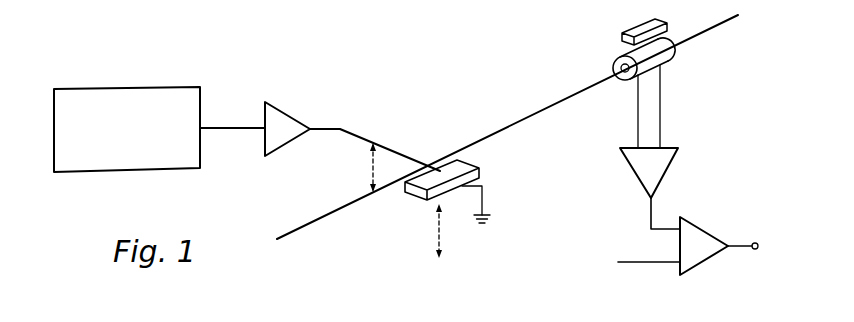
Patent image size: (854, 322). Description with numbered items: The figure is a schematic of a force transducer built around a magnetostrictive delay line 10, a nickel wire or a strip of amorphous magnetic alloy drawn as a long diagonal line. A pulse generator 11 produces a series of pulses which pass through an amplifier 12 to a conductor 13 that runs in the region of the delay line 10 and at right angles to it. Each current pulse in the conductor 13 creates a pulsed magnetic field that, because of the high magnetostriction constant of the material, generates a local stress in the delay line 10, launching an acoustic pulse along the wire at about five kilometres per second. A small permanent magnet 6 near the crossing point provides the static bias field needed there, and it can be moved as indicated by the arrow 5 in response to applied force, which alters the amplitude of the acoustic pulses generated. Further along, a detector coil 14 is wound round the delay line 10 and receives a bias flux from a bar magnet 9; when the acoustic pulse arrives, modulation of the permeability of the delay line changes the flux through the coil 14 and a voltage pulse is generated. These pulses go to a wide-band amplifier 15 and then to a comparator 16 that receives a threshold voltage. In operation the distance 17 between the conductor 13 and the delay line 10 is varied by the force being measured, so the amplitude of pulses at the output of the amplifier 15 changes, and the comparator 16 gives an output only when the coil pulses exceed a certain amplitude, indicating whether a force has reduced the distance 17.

The arrow 5 is at (437, 230).
The permanent magnet 6 is at (411, 198).
The bar magnet 9 is at (632, 34).
The magnetostrictive delay line 10 is at (517, 121).
The pulse generator 11 is at (123, 88).
The amplifier 12 is at (288, 114).
The conductor 13 is at (504, 157).
The detector coil 14 is at (664, 58).
The wide-band amplifier 15 is at (675, 161).
The comparator 16 is at (701, 227).
The distance 17 is at (373, 167).